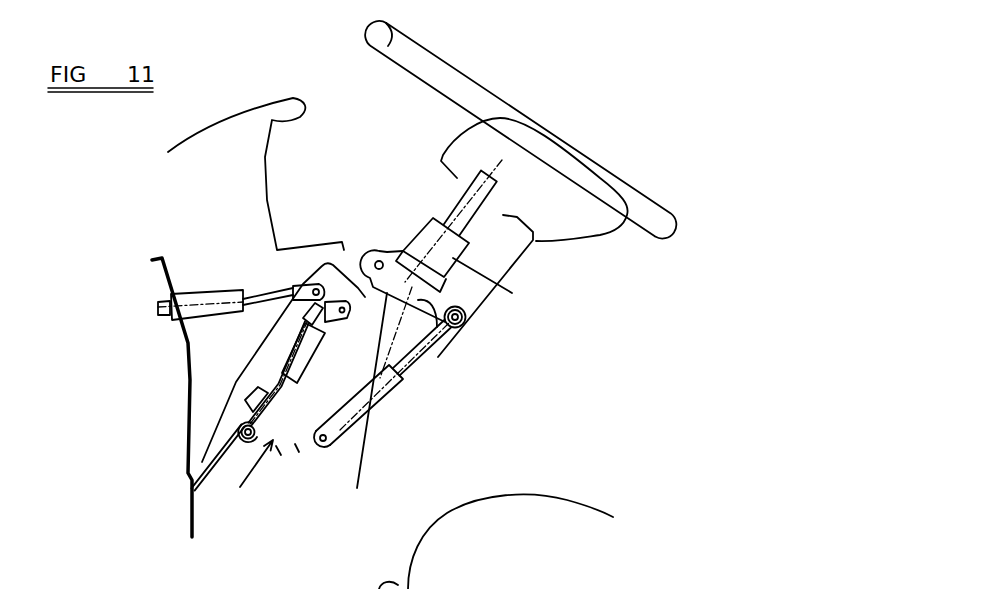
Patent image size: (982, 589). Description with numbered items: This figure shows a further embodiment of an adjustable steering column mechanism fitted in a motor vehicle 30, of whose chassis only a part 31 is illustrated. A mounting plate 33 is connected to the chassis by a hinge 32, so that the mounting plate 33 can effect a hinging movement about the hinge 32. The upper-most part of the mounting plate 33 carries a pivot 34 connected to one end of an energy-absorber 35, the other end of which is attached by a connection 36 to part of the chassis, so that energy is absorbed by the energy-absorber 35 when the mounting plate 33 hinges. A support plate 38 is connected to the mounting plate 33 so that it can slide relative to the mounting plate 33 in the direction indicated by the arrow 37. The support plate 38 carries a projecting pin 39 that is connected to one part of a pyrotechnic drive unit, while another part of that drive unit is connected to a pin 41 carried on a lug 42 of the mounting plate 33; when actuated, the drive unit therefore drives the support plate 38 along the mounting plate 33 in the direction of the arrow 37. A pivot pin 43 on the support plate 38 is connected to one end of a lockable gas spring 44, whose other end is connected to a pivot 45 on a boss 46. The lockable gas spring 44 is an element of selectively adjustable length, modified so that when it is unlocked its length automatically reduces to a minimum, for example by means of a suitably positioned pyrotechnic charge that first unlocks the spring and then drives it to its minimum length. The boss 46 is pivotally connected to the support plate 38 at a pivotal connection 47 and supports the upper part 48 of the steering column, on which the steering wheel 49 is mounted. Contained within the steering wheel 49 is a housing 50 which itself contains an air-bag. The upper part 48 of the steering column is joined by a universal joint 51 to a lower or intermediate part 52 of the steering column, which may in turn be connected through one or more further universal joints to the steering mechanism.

The motor vehicle 30 is at (237, 123).
The part of the chassis 31 is at (185, 376).
The hinge 32 is at (206, 491).
The mounting plate 33 is at (239, 377).
The pivot 34 is at (303, 283).
The energy-absorber 35 is at (220, 293).
The connection 36 is at (160, 305).
The arrow 37 is at (297, 448).
The support plate 38 is at (278, 450).
The projecting pin 39 is at (366, 272).
The pin 41 is at (250, 442).
The lug 42 is at (240, 431).
The pivot pin 43 is at (335, 437).
The lockable gas spring 44 is at (393, 380).
The pivot 45 is at (470, 322).
The boss 46 is at (453, 255).
The pivotal connection 47 is at (363, 237).
The upper part of the steering column 48 is at (497, 197).
The steering wheel 49 is at (643, 207).
The housing 50 is at (563, 162).
The universal joint 51 is at (437, 335).
The lower or intermediate part of the steering column 52 is at (358, 477).